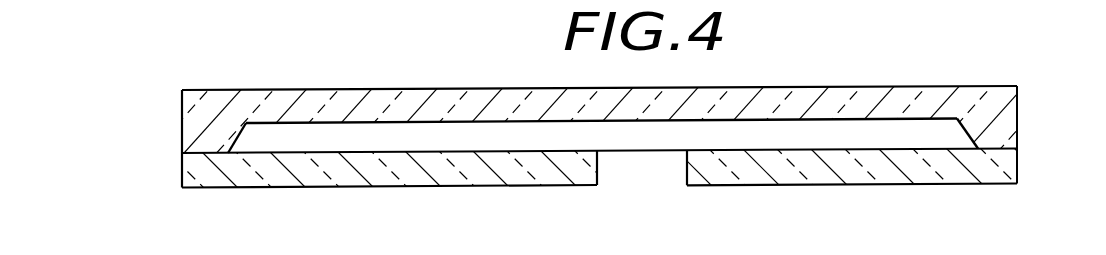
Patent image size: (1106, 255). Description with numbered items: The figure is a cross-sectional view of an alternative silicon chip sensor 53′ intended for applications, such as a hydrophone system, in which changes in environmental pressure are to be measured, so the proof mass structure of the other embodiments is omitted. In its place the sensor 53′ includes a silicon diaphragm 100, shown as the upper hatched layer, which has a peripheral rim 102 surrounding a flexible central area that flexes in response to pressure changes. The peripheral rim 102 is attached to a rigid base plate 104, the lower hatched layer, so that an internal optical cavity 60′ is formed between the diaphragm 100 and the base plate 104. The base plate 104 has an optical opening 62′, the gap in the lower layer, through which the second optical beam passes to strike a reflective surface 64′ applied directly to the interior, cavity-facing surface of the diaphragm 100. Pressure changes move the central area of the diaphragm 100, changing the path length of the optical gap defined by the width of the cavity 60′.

The sensor 53′ is at (158, 120).
The internal optical cavity 60′ is at (349, 140).
The optical opening 62′ is at (598, 163).
The reflective surface 64′ is at (656, 118).
The silicon diaphragm 100 is at (880, 86).
The peripheral rim 102 is at (1018, 128).
The rigid base plate 104 is at (977, 174).